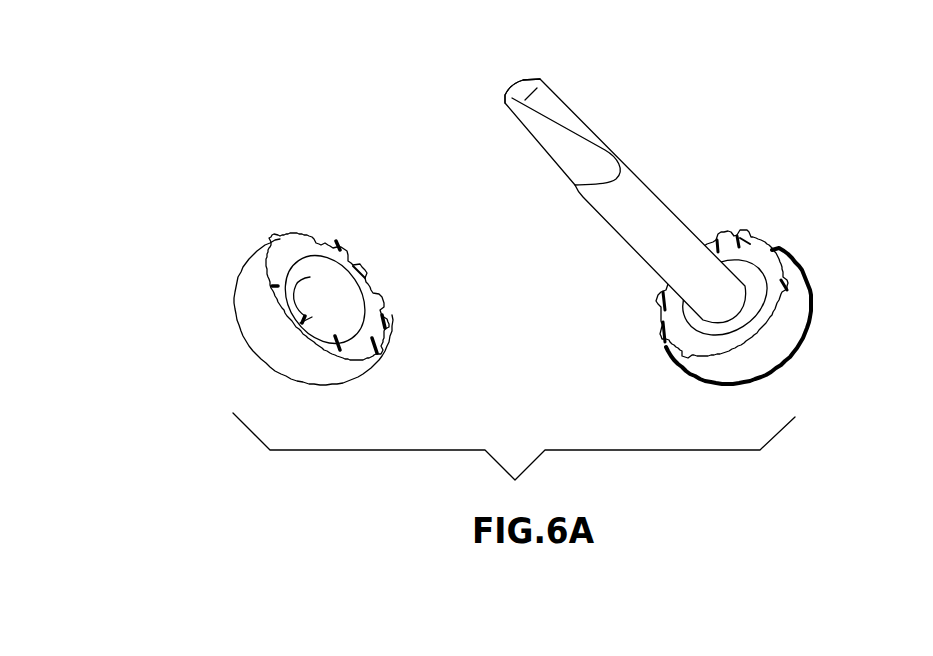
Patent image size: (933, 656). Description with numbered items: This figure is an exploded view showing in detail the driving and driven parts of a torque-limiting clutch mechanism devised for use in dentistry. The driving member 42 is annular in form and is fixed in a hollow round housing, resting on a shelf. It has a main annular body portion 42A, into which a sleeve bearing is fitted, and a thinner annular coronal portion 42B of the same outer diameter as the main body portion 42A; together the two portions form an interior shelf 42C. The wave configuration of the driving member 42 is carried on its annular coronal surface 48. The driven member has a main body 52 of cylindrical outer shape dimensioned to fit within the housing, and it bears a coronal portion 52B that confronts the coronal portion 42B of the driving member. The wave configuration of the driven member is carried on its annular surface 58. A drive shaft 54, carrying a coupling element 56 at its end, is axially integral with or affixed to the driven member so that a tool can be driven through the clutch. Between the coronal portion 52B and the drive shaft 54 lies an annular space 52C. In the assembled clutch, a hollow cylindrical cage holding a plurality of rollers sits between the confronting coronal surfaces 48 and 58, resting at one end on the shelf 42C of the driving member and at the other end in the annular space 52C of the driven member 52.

The driving member 42 is at (255, 322).
The main annular body portion 42A is at (315, 300).
The annular coronal portion 42B is at (355, 283).
The interior shelf 42C is at (353, 325).
The annular coronal surface 48 is at (382, 300).
The main body 52 is at (795, 312).
The coronal portion 52B is at (747, 248).
The annular space 52C is at (758, 270).
The drive shaft 54 is at (645, 180).
The coupling element 56 is at (527, 85).
The annular surface 58 is at (660, 330).